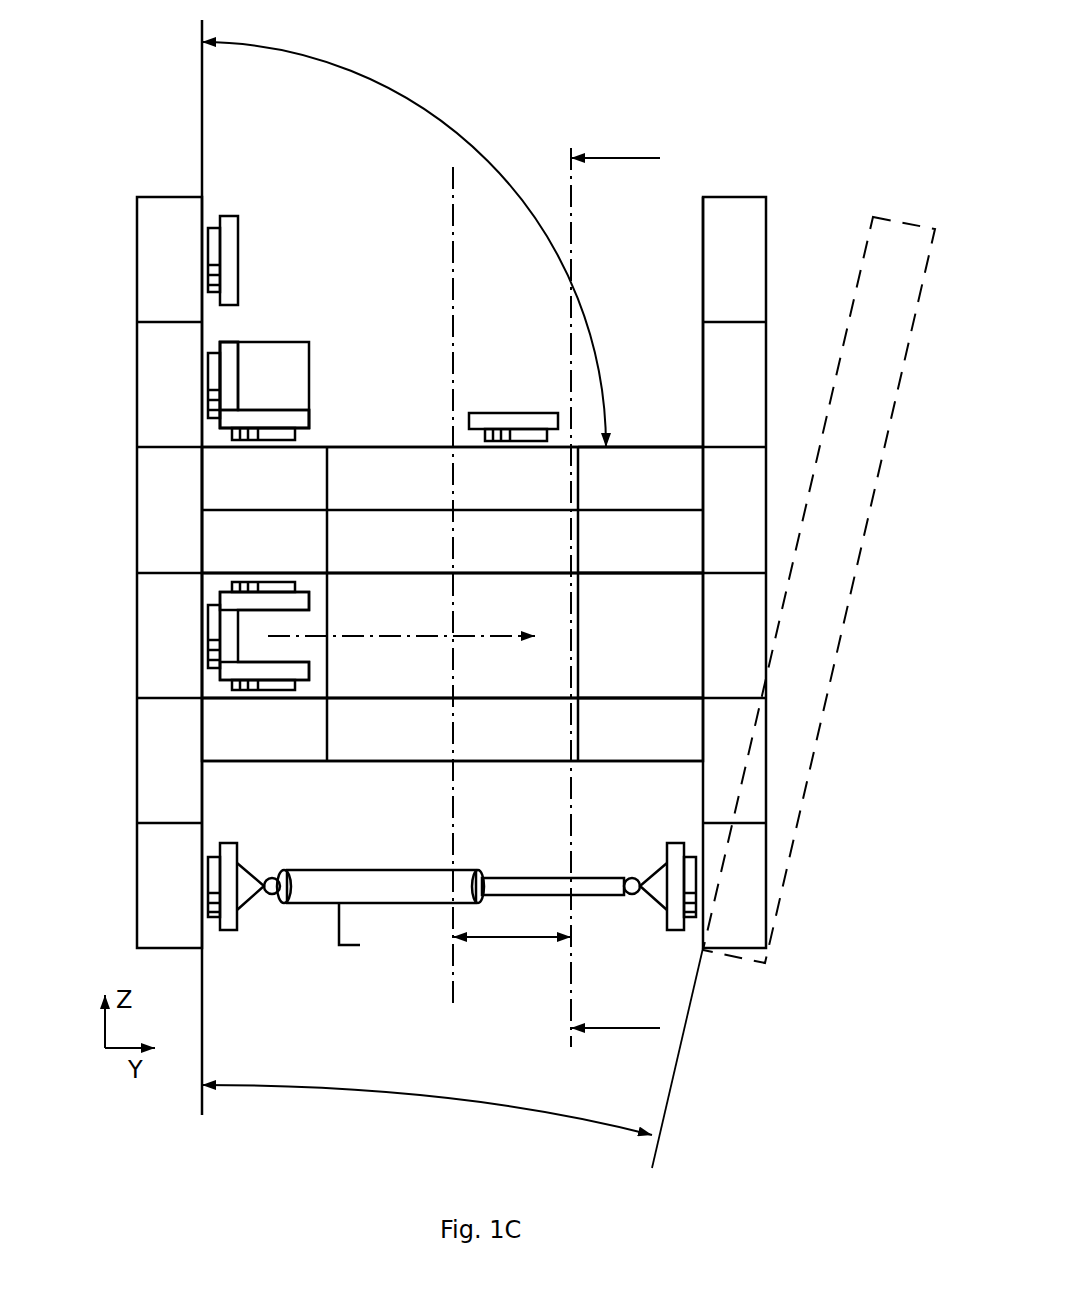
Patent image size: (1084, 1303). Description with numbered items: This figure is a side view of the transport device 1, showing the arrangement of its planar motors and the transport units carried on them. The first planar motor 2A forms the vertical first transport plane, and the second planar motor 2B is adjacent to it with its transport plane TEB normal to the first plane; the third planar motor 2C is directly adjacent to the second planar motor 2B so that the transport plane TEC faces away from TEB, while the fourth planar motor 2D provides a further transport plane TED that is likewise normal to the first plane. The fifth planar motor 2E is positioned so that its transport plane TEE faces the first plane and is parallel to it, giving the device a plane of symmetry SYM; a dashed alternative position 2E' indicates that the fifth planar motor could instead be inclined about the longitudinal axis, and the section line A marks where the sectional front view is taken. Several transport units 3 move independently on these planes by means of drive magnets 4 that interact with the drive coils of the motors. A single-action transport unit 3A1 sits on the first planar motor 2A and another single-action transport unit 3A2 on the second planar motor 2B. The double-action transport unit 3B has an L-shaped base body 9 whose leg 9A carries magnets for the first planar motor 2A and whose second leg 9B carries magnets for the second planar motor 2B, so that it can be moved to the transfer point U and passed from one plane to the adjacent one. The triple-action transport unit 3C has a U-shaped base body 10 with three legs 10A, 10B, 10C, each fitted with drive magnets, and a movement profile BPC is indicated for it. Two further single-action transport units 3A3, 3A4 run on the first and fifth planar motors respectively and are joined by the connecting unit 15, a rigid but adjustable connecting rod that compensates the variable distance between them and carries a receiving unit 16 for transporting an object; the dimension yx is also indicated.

The transport device 1 is at (135, 183).
The first planar motor 2A is at (176, 246).
The second planar motor 2B is at (618, 485).
The third planar motor 2C is at (660, 552).
The fourth planar motor 2D is at (630, 742).
The fifth planar motor 2E is at (744, 534).
The inclined fifth planar motor 2E' is at (798, 652).
The transport unit 3 is at (322, 305).
The single-action transport unit 3A1 is at (232, 232).
The single-action transport unit 3A2 is at (520, 422).
The single-action transport unit 3A3 is at (228, 872).
The single-action transport unit 3A4 is at (673, 878).
The double-action transport unit 3B is at (232, 420).
The triple-action transport unit 3C is at (283, 602).
The drive magnets 4 is at (212, 397).
The L-shaped base body 9 is at (246, 354).
The leg 9A is at (232, 387).
The second leg 9B is at (296, 420).
The U-shaped base body 10 is at (340, 648).
The leg 10A is at (300, 600).
The leg 10B is at (295, 670).
The leg 10C is at (228, 620).
The connecting unit 15 is at (395, 887).
The receiving unit 16 is at (337, 925).
The plane of symmetry SYM is at (424, 587).
The movement profile BPC is at (455, 636).
The transport plane TEE is at (700, 272).
The second transport plane TEB is at (683, 447).
The transport plane TEC is at (612, 576).
The transport plane TED is at (620, 694).
The transfer point U is at (205, 438).
The section line A is at (615, 599).
The distance yx is at (427, 1097).